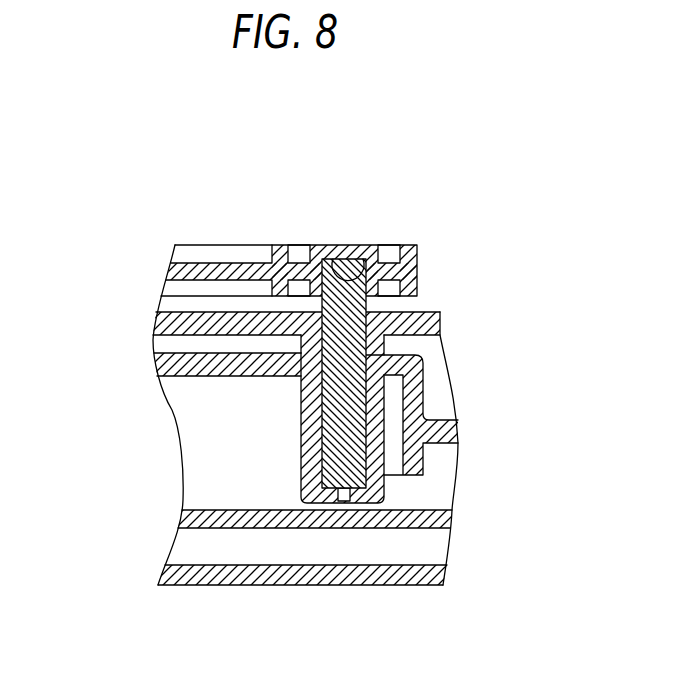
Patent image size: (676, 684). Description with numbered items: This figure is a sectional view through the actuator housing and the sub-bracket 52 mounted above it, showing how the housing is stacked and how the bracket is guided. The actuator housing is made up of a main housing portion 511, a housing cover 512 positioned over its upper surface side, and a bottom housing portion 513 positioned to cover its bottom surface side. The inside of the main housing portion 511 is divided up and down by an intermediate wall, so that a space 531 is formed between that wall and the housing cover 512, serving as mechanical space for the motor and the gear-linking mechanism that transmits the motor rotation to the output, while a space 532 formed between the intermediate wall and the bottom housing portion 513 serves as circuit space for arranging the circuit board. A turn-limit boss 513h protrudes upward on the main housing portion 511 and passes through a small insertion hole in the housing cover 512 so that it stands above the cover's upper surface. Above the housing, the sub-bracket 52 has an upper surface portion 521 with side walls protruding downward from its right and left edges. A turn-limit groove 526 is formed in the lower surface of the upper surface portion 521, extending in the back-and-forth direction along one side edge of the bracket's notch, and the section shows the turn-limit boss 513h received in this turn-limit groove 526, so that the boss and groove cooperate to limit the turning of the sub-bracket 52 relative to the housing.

The sub-bracket 52 is at (282, 247).
The upper surface portion 521 is at (342, 258).
The turn-limit groove 526 is at (362, 263).
The turn-limit boss 513h is at (348, 335).
The housing cover 512 is at (150, 321).
The main housing portion 511 is at (420, 390).
The space 531 is at (192, 438).
The space 532 is at (272, 548).
The bottom housing portion 513 is at (378, 575).